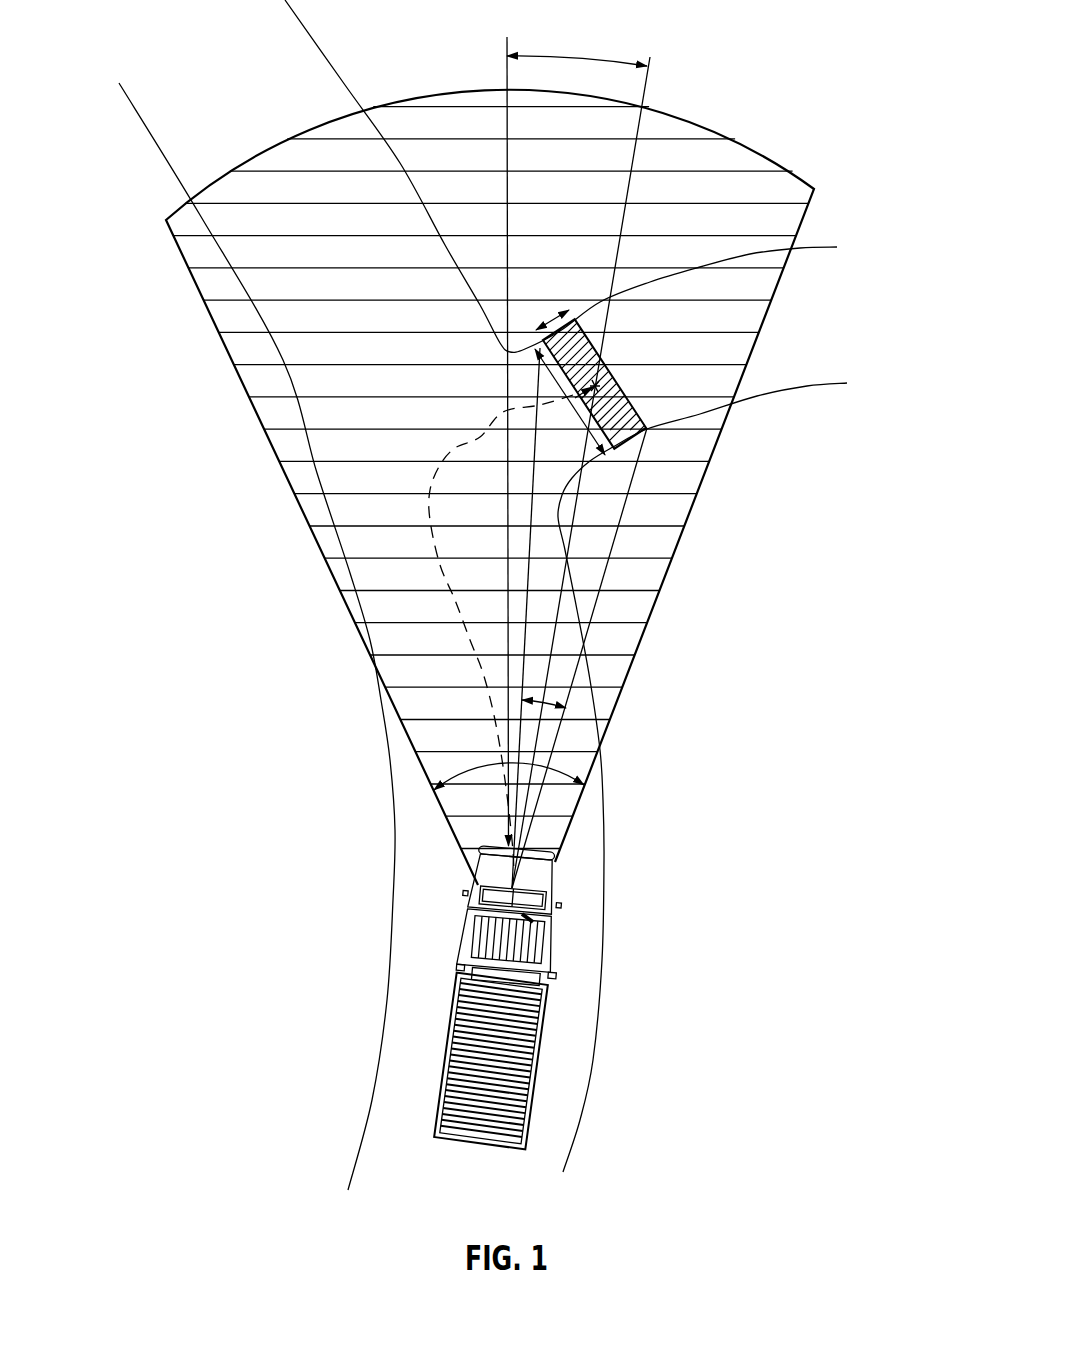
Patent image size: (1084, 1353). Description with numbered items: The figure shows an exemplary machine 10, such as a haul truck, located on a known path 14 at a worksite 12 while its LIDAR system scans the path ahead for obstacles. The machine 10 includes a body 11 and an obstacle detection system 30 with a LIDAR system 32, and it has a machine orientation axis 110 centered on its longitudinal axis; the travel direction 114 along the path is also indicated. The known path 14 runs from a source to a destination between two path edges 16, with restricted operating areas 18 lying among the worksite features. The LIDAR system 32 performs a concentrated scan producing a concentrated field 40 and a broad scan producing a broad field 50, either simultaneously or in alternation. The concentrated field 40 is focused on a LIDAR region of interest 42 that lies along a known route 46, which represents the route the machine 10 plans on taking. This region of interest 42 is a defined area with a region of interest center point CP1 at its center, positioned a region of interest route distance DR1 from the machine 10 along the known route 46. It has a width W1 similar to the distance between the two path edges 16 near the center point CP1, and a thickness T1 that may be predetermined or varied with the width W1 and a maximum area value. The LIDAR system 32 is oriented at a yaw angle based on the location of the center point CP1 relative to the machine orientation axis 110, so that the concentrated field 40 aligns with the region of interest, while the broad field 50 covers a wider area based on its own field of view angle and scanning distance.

The machine 10 is at (532, 997).
The body 11 is at (465, 930).
The worksite 12 is at (652, 740).
The known path 14 is at (805, 297).
The path edges 16 is at (818, 247).
The restricted operating areas 18 is at (645, 988).
The obstacle detection system 30 is at (557, 914).
The LIDAR system 32 is at (527, 917).
The concentrated field 40 is at (611, 550).
The LIDAR region of interest 42 is at (637, 401).
The known route 46 is at (468, 445).
The broad field 50 is at (209, 316).
The machine orientation axis 110 is at (505, 75).
The direction of travel 114 is at (292, 47).
The thickness T1 is at (548, 325).
The width W1 is at (569, 397).
The region of interest center point CP1 is at (603, 383).
The region of interest route distance DR1 is at (463, 621).